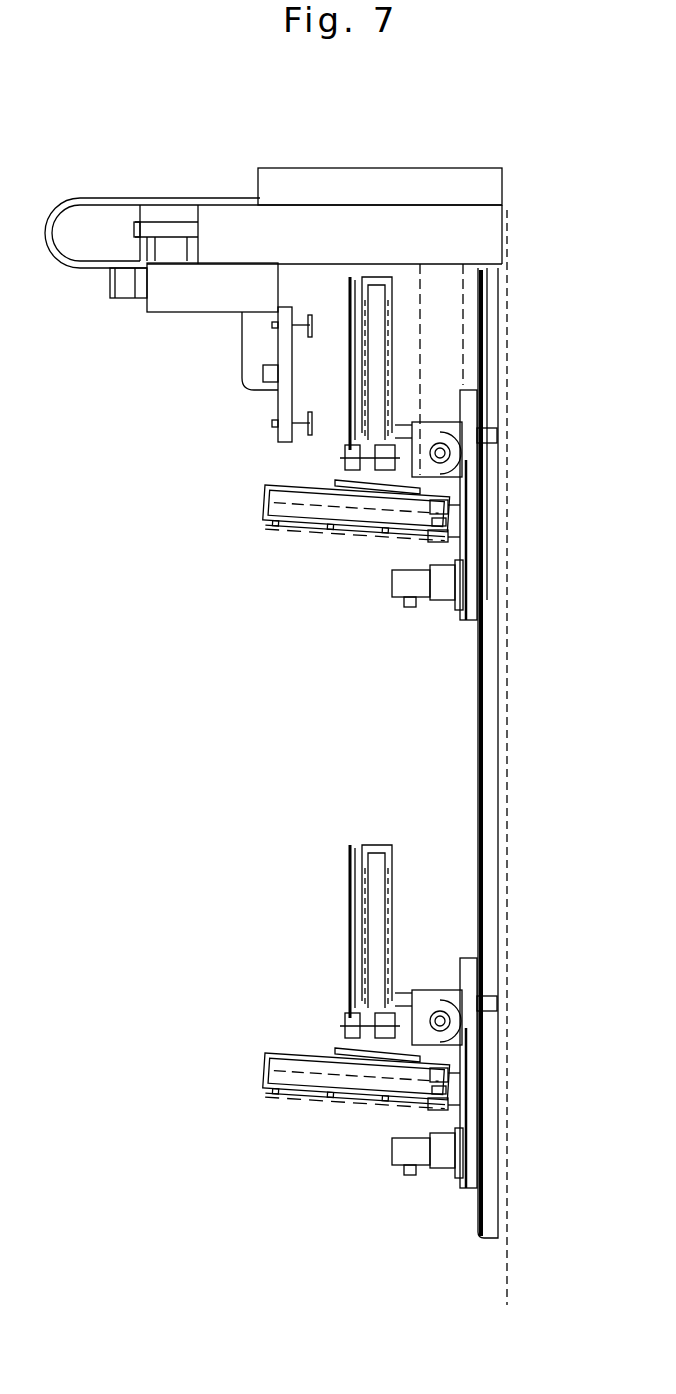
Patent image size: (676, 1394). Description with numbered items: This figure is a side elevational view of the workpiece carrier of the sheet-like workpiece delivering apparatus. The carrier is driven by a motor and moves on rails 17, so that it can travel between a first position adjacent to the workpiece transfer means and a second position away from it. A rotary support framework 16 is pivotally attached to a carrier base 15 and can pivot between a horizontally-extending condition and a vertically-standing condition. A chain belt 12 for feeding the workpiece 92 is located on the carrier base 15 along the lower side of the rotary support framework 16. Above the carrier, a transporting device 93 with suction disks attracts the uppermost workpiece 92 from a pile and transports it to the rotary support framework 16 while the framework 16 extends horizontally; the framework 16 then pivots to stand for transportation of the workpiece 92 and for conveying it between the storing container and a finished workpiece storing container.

The transporting device 93 is at (209, 194).
The rails 17 is at (478, 683).
The rotary support framework 16 is at (265, 486).
The workpiece 92 is at (330, 535).
The chain belt 12 is at (432, 542).
The carrier base 15 is at (465, 612).